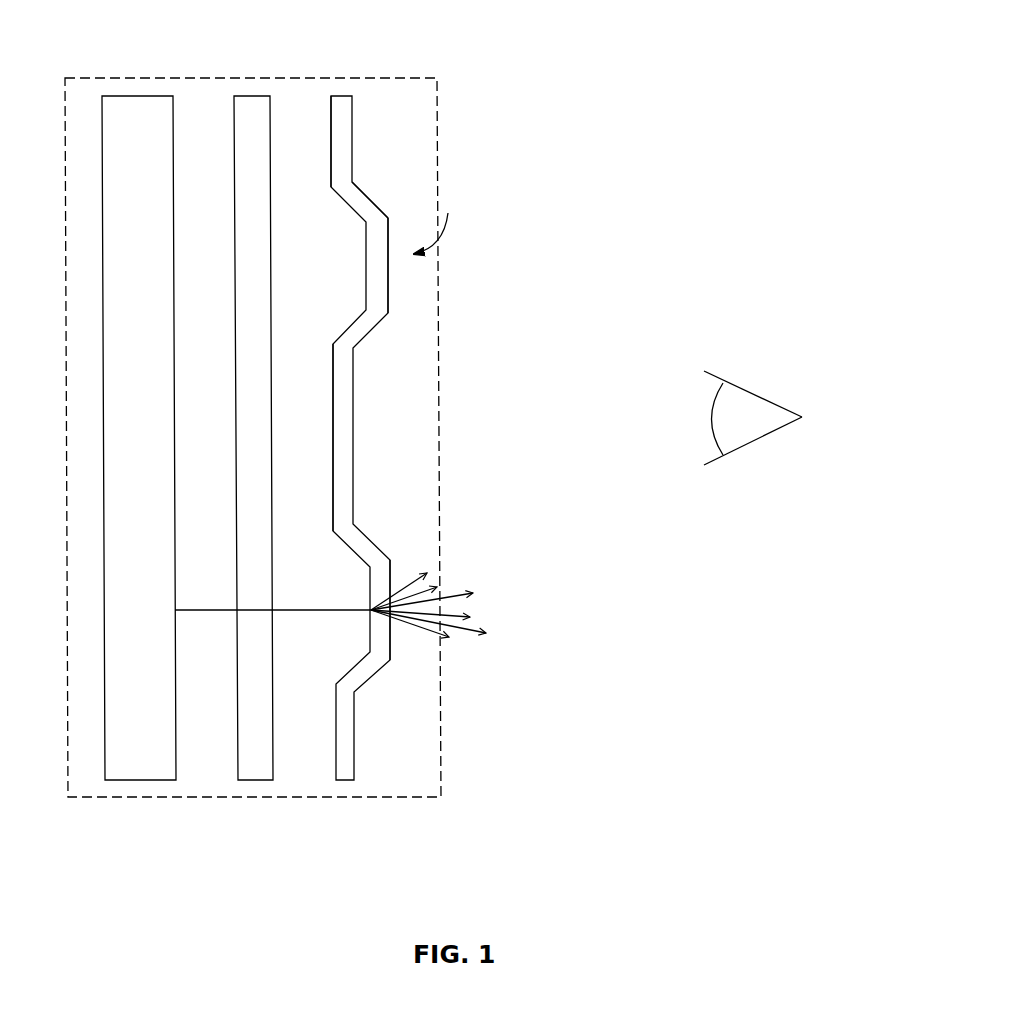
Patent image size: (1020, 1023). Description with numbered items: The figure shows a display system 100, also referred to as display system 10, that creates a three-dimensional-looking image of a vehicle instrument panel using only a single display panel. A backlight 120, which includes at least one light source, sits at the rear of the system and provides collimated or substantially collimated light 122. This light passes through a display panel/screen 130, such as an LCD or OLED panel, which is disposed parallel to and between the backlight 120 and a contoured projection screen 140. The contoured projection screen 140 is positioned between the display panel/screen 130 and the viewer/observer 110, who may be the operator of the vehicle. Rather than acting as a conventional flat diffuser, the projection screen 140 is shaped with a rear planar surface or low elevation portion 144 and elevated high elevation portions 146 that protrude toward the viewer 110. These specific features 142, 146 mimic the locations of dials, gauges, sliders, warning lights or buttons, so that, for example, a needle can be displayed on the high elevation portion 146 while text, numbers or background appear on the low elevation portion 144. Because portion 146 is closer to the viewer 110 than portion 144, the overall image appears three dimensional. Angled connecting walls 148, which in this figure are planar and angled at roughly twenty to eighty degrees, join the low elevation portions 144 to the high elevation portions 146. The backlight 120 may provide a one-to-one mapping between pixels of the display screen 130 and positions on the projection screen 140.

The display system 10 is at (550, 194).
The display system 100 is at (112, 78).
The viewer/observer 110 is at (745, 383).
The backlight 120 is at (139, 438).
The collimated light 122 is at (348, 610).
The display panel/screen 130 is at (250, 104).
The contoured projection screen 140 is at (345, 102).
The specific features 142 is at (455, 221).
The low elevation portion 144 is at (388, 123).
The high elevation portion 146 is at (383, 287).
The angled connecting walls 148 is at (358, 195).